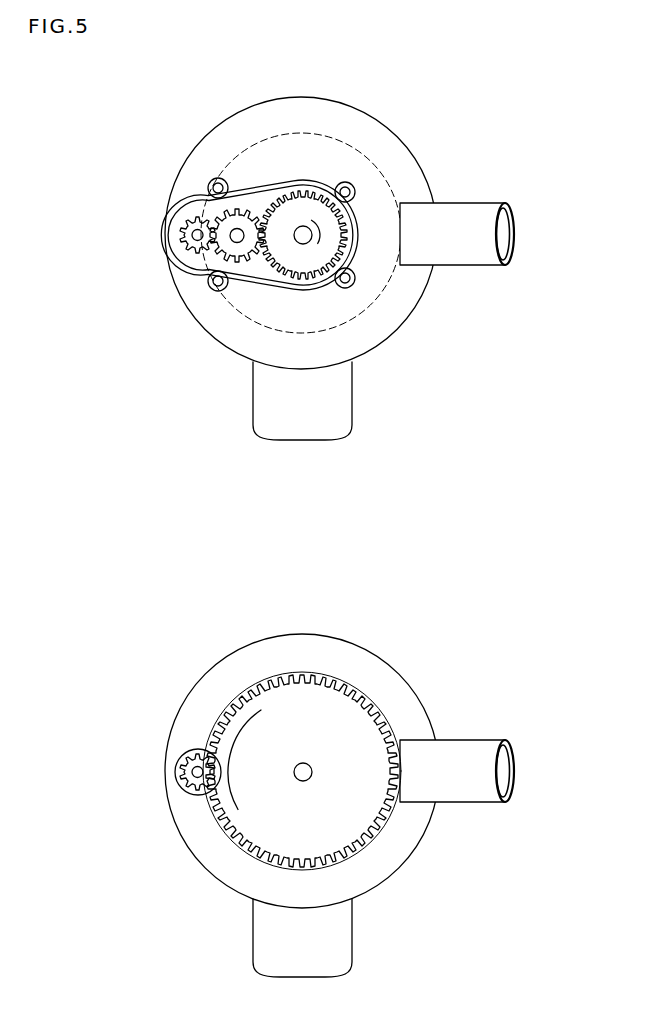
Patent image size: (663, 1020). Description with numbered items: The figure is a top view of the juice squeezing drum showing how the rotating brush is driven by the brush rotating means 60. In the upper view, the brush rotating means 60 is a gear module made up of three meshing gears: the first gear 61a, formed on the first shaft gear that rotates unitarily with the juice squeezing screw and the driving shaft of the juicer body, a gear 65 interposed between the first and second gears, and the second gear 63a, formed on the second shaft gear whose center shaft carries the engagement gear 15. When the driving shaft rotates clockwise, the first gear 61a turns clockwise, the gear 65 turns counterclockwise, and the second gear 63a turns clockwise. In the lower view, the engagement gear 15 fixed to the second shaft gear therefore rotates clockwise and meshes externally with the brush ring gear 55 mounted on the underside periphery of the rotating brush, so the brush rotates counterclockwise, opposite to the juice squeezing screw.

The brush rotating means 60 is at (77, 247).
The second gear 63a is at (172, 225).
The gear 65 is at (235, 250).
The first gear 61a is at (300, 256).
The brush ring gear 55 is at (268, 678).
The engagement gear 15 is at (183, 754).